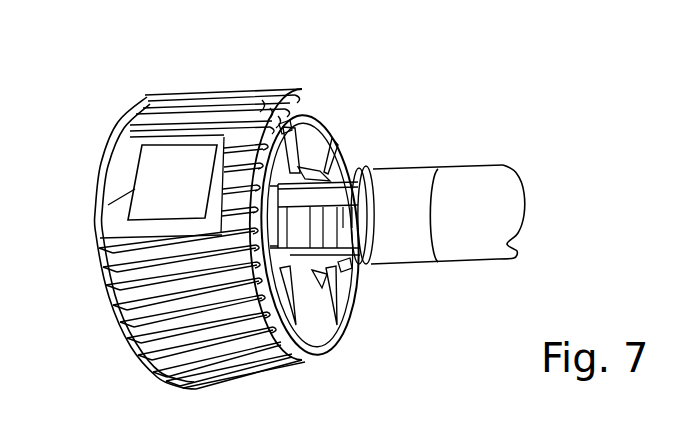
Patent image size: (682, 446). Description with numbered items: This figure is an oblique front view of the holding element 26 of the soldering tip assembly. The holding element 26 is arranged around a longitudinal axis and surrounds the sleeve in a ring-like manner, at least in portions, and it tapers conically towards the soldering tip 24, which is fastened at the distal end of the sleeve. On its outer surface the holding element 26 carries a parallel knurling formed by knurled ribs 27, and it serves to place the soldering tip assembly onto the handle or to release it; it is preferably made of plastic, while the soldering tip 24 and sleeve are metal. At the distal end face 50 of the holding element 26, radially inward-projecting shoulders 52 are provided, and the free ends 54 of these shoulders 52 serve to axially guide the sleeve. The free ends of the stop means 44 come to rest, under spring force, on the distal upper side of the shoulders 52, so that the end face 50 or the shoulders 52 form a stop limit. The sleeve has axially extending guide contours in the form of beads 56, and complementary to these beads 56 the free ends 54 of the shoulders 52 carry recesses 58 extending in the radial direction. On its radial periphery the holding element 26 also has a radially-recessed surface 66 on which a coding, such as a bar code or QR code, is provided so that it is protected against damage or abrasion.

The soldering tip 24 is at (483, 190).
The holding element 26 is at (235, 92).
The knurled ribs 27 is at (172, 96).
The stop means 44 is at (324, 168).
The distal end face 50 is at (323, 131).
The shoulders 52 is at (308, 157).
The free ends 54 is at (285, 125).
The beads 56 is at (332, 182).
The recesses 58 is at (283, 236).
The radially-recessed surface 66 is at (138, 160).